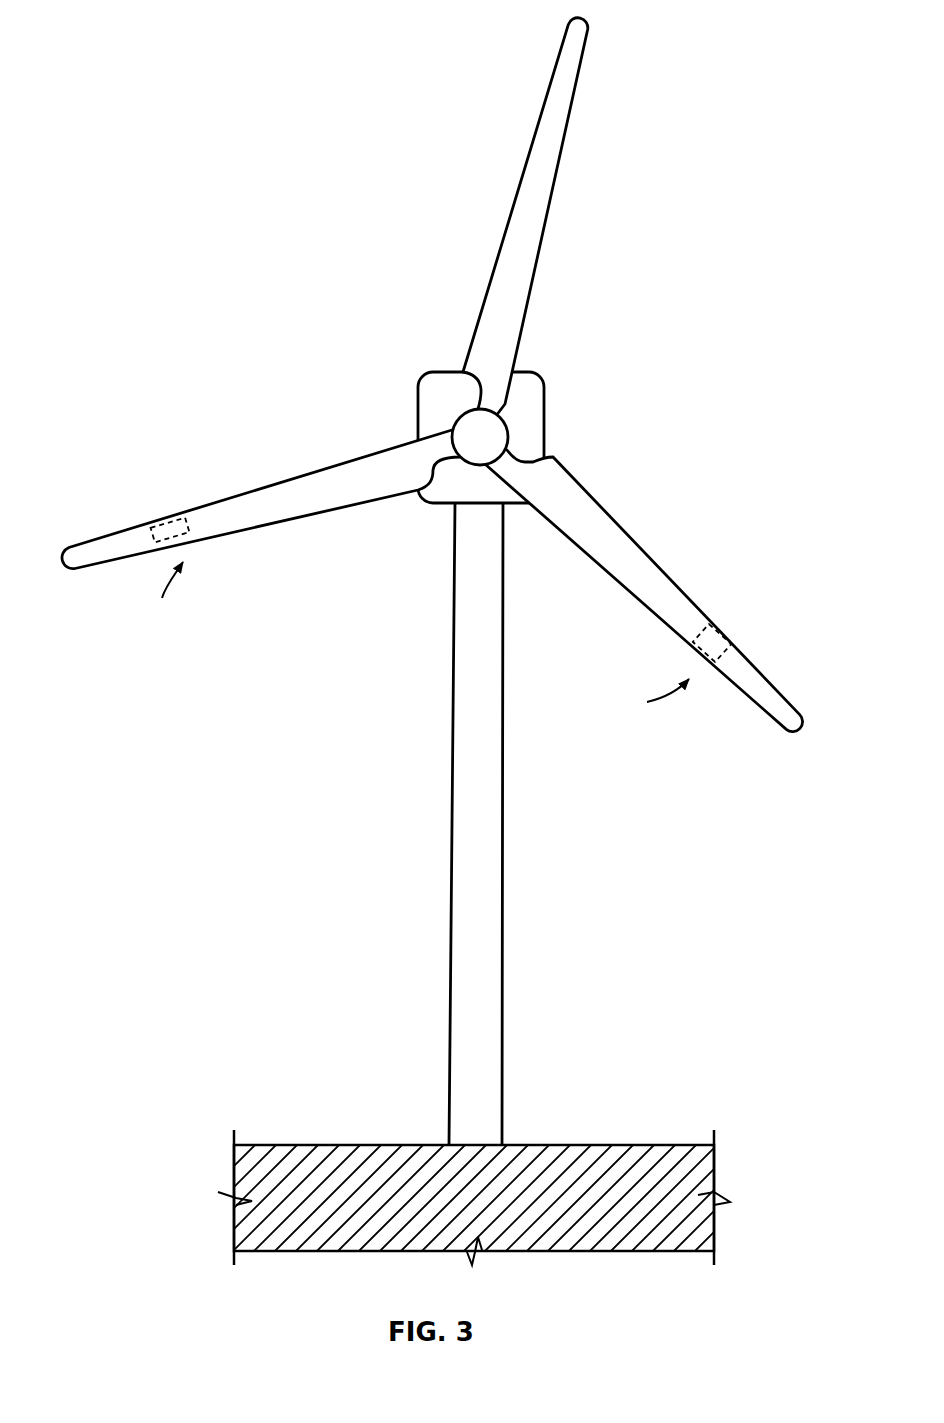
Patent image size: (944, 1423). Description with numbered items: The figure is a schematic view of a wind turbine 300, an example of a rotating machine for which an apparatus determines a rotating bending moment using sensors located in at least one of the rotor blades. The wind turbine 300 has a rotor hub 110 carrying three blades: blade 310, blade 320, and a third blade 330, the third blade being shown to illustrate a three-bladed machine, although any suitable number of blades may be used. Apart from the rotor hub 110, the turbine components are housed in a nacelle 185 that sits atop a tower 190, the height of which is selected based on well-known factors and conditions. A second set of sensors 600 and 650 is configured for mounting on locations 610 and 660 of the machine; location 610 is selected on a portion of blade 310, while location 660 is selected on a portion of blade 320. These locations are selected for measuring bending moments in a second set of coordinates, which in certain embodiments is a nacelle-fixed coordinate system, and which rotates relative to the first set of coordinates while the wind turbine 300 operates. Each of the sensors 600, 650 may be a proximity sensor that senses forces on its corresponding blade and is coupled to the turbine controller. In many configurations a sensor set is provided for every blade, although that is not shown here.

The wind turbine 300 is at (228, 86).
The rotor hub 110 is at (473, 433).
The nacelle 185 is at (525, 372).
The tower 190 is at (461, 887).
The blade 310 is at (635, 557).
The blade 320 is at (319, 482).
The third blade 330 is at (528, 192).
The sensor 600 is at (722, 636).
The location 610 is at (642, 698).
The sensor 650 is at (168, 517).
The location 660 is at (166, 597).